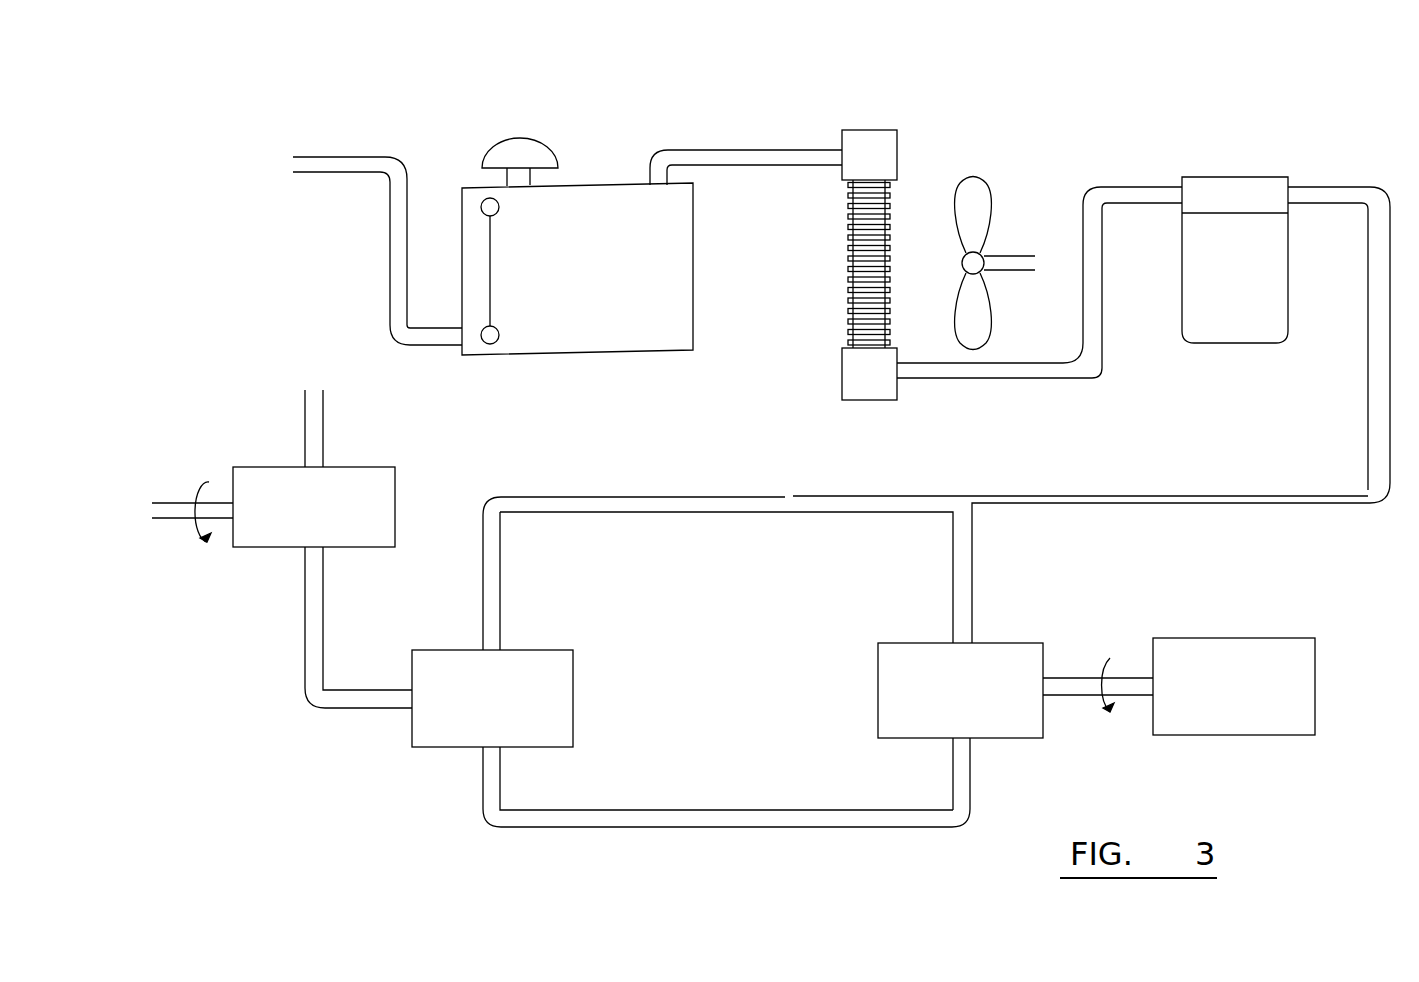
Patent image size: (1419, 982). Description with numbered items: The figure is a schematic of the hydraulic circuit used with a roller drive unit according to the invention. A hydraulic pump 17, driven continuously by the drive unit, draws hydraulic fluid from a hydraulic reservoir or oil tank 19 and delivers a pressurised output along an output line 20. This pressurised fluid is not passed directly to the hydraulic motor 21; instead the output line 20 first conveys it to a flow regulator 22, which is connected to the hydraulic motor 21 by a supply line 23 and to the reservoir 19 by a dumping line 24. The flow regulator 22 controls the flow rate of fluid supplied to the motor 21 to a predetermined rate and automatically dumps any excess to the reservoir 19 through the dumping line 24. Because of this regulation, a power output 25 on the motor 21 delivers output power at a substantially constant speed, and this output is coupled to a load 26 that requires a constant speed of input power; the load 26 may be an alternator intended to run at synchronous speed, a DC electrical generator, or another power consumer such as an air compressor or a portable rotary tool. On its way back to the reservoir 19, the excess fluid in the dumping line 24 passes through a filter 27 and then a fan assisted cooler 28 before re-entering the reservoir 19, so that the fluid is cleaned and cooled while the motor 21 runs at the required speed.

The hydraulic pump 17 is at (375, 487).
The hydraulic reservoir 19 is at (595, 210).
The output line 20 is at (358, 702).
The hydraulic motor 21 is at (920, 663).
The flow regulator 22 is at (533, 678).
The supply line 23 is at (663, 818).
The dumping line 24 is at (693, 503).
The power output 25 is at (1063, 683).
The load 26 is at (1292, 662).
The filter 27 is at (1243, 190).
The fan assisted cooler 28 is at (893, 227).